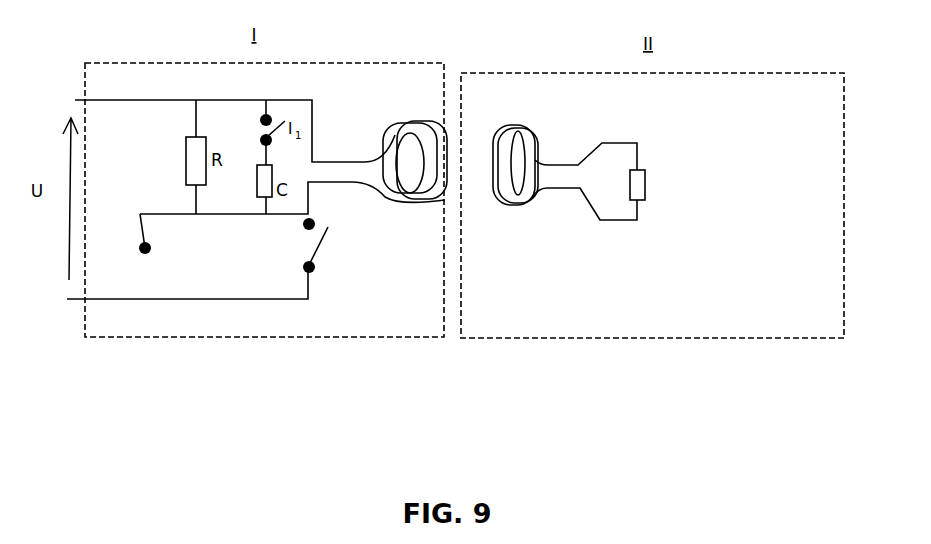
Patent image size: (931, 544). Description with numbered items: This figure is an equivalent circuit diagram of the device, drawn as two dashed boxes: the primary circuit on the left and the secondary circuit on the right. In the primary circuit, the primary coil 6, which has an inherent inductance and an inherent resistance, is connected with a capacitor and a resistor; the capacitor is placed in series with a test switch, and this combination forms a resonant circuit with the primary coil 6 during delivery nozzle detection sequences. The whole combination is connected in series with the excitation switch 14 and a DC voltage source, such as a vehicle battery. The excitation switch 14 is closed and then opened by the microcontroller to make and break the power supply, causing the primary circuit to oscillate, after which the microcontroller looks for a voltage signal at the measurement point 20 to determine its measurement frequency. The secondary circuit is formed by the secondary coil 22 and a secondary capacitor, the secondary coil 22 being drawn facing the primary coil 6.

The primary coil 6 is at (412, 137).
The secondary coil 22 is at (518, 131).
The measurement point 20 is at (147, 252).
The excitation switch 14 is at (322, 245).